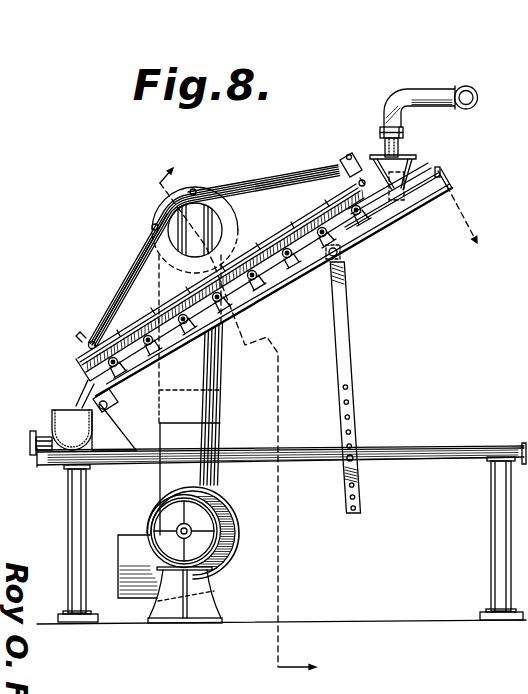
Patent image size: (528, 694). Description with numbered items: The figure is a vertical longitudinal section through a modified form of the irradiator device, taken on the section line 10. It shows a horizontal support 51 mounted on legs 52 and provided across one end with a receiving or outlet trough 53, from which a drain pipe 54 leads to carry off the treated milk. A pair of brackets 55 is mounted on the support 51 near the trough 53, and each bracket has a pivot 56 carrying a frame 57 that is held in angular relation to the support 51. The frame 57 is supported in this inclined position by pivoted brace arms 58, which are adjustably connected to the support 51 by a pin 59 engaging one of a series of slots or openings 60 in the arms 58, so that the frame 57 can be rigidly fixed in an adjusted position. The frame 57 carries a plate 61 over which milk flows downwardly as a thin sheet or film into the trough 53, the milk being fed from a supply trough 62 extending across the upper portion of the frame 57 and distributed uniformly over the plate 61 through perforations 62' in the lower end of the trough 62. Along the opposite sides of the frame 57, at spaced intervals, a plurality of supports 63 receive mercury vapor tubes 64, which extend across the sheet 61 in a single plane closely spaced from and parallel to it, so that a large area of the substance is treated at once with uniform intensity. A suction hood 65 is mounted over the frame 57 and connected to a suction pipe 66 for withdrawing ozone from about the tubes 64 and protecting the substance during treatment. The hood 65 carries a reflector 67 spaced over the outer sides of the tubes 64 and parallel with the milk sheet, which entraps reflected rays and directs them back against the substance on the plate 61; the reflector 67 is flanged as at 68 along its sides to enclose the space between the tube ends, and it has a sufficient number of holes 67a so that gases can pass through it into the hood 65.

The section line 10- 10 is at (249, 416).
The horizontal support 51 is at (436, 462).
The legs 52 is at (494, 509).
The receiving or outlet trough 53 is at (52, 414).
The drain pipe 54 is at (48, 456).
The brackets 55 is at (122, 442).
The pivot 56 is at (110, 402).
The frame 57 is at (281, 292).
The pivoted brace arms 58 is at (347, 364).
The pin 59 is at (346, 460).
The slots or openings 60 is at (357, 484).
The plate 61 is at (447, 178).
The supply trough 62 is at (424, 143).
The perforations 62' is at (453, 231).
The supports 63 is at (350, 227).
The mercury vapor tubes 64 is at (372, 224).
The suction hood 65 is at (250, 186).
The suction pipe 66 is at (217, 379).
The reflector 67 is at (290, 208).
The holes 67a is at (168, 293).
The flange 68 is at (265, 300).